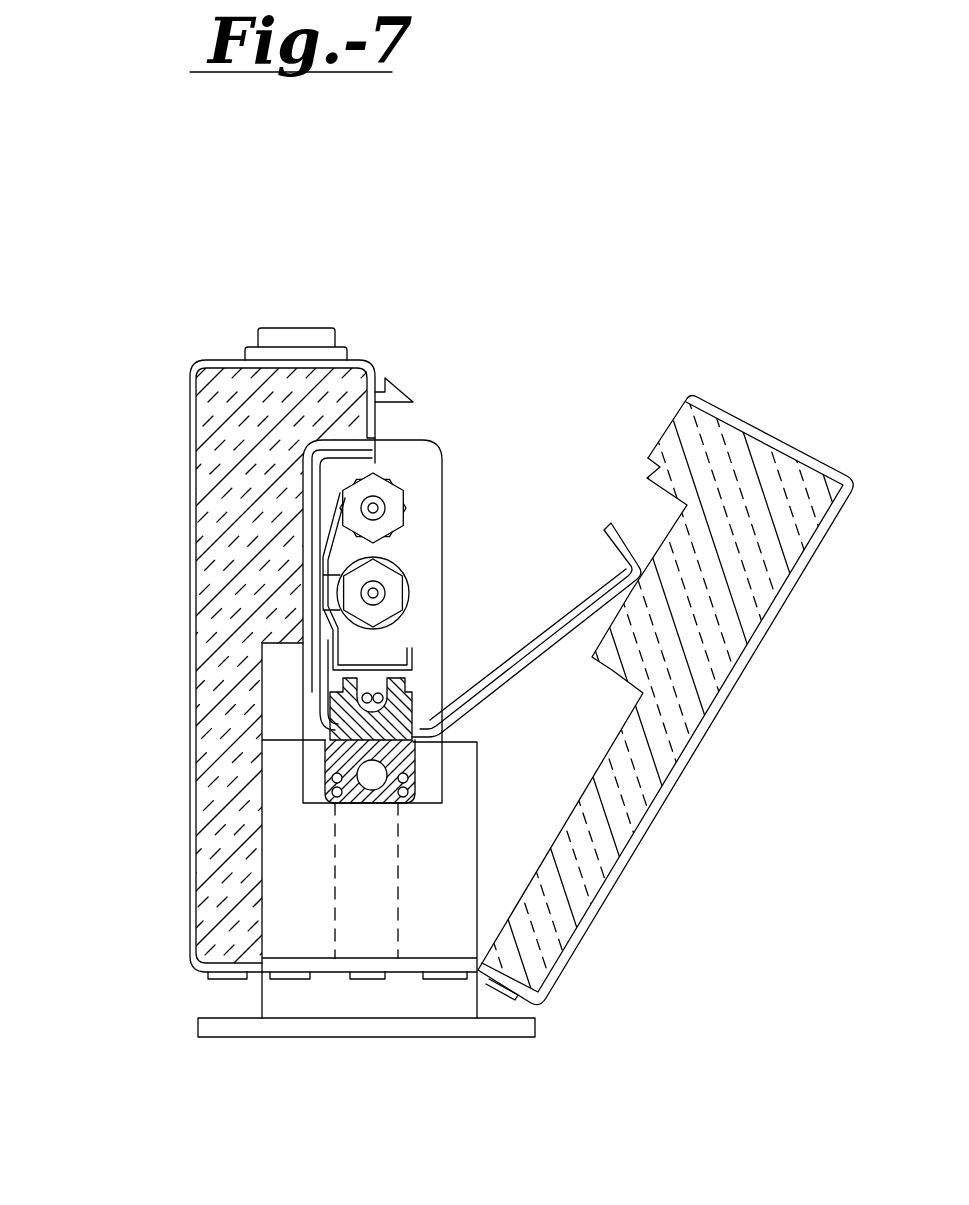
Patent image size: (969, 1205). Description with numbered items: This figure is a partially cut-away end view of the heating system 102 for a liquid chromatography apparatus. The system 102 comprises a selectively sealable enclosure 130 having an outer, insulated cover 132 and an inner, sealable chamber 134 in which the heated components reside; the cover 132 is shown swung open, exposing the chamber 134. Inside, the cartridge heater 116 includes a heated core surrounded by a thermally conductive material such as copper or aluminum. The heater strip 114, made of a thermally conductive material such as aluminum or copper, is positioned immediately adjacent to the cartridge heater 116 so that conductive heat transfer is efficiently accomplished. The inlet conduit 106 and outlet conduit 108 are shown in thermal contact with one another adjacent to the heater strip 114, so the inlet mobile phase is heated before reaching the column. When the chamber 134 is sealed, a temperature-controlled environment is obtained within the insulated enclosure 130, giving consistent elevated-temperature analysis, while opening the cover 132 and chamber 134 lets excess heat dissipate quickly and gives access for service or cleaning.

The heating system 102 is at (410, 292).
The inlet conduit 106 is at (377, 680).
The outlet conduit 108 is at (407, 668).
The thermally conductive strip 114 is at (332, 712).
The cartridge heater 116 is at (373, 790).
The selectively sealable enclosure 130 is at (198, 362).
The outer insulated cover 132 is at (663, 442).
The inner sealable chamber 134 is at (610, 513).